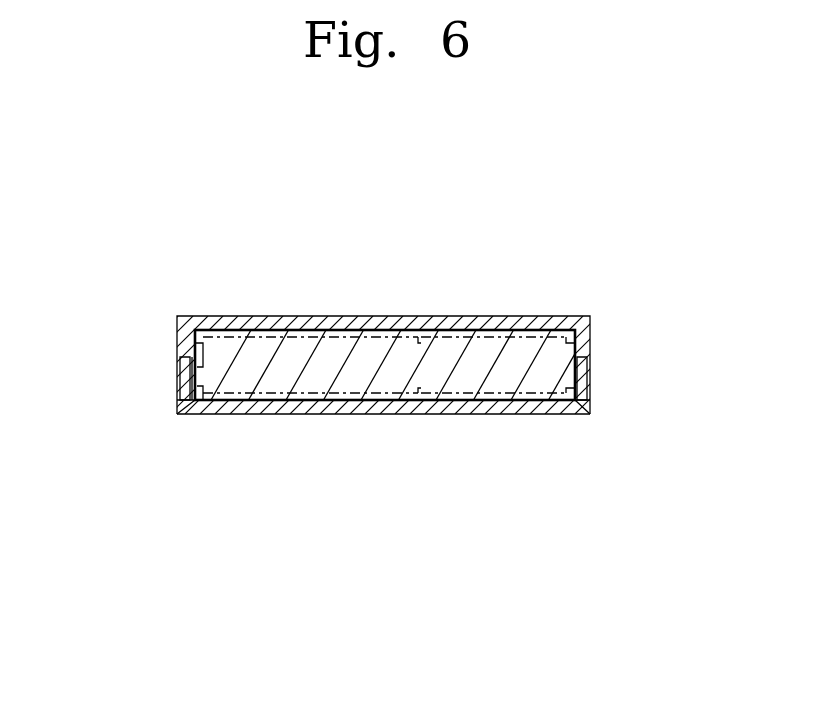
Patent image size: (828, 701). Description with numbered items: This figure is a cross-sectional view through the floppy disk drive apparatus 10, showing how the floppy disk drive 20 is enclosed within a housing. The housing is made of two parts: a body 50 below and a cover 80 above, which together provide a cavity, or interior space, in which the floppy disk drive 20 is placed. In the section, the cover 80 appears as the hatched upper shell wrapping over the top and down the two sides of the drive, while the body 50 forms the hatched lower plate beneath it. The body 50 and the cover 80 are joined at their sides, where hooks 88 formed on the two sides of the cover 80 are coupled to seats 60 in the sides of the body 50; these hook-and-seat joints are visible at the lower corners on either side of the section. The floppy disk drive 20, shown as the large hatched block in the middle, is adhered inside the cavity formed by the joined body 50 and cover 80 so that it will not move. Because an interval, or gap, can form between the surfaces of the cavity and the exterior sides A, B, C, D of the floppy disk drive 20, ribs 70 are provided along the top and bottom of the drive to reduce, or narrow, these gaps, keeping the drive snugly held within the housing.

The floppy disk drive apparatus 10 is at (387, 151).
The floppy disk drive 20 is at (449, 345).
The body 50 is at (457, 412).
The seats 60 is at (191, 414).
The ribs 70 is at (285, 336).
The cover 80 is at (565, 325).
The hooks 88 is at (180, 375).
The exterior side of the floppy disk drive A is at (180, 338).
The exterior side of the floppy disk drive B is at (588, 340).
The exterior side of the floppy disk drive C is at (393, 412).
The exterior side of the floppy disk drive D is at (392, 330).